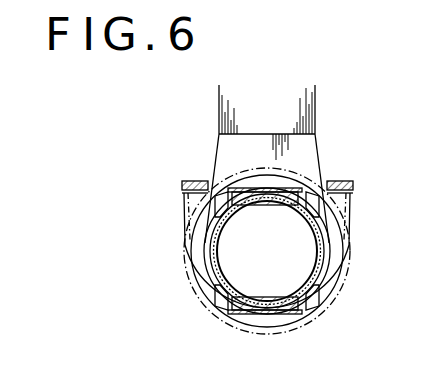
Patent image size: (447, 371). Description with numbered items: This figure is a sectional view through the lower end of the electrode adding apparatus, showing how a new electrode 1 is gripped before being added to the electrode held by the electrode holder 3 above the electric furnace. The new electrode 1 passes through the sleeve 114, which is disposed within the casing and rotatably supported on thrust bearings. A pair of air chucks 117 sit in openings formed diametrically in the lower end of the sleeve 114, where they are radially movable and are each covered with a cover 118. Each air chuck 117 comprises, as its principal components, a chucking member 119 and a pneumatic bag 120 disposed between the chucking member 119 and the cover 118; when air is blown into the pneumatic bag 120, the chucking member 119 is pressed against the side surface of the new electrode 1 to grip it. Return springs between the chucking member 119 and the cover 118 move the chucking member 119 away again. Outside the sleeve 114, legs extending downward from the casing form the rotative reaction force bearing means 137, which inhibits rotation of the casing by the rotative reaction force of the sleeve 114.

The new electrode 1 is at (215, 268).
The electrode holder 3 is at (319, 142).
The sleeve 114 is at (320, 265).
The air chuck 117 is at (291, 184).
The cover 118 is at (238, 320).
The chucking member 119 is at (305, 314).
The pneumatic bag 120 is at (228, 312).
The rotative reaction force bearing means 137 is at (182, 183).